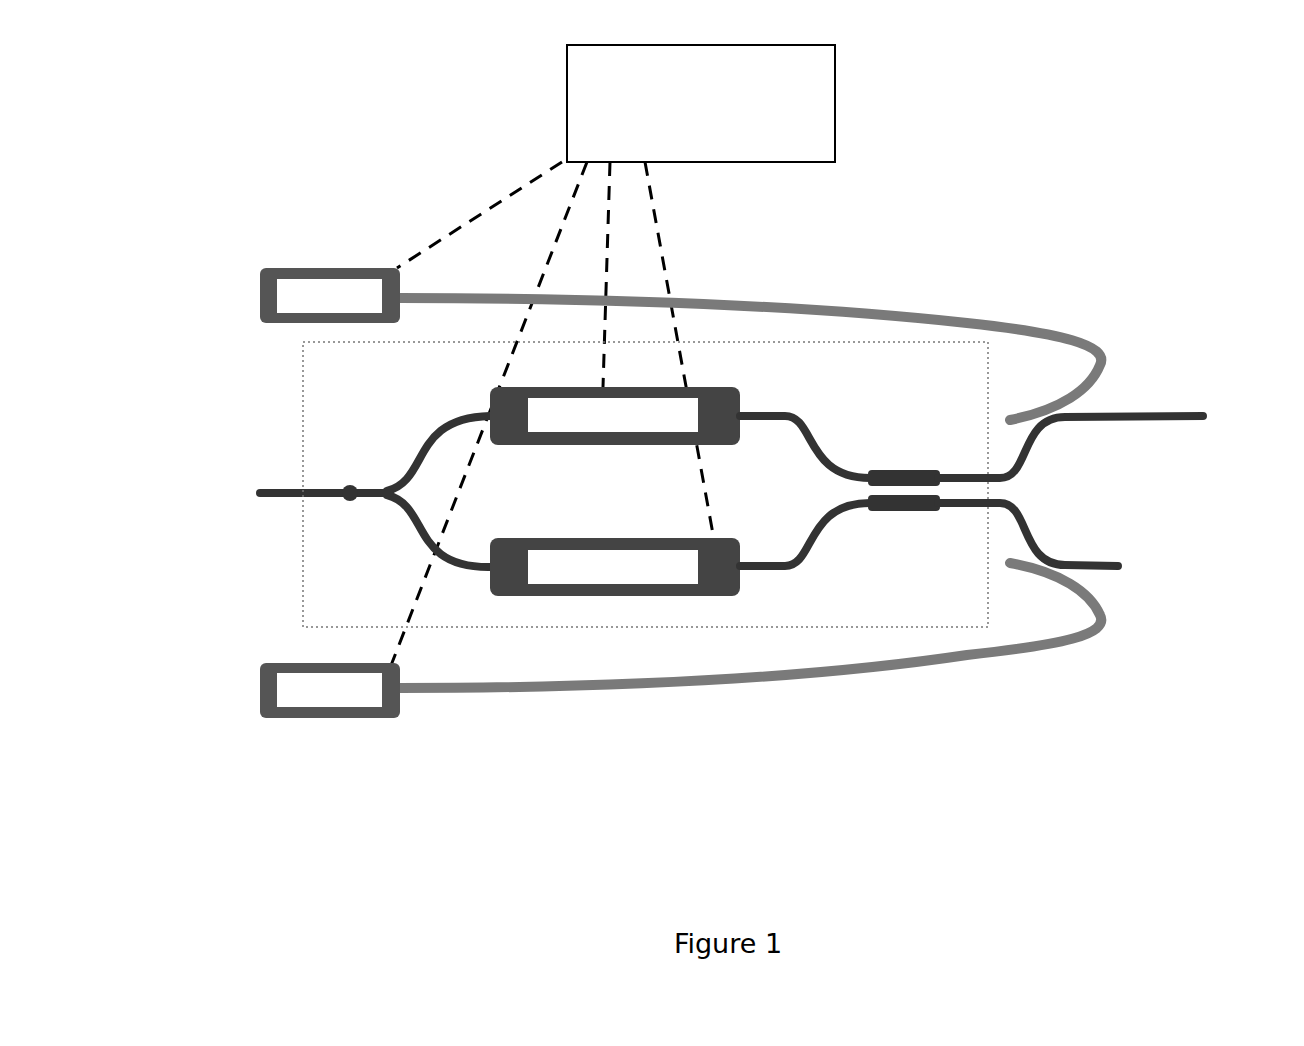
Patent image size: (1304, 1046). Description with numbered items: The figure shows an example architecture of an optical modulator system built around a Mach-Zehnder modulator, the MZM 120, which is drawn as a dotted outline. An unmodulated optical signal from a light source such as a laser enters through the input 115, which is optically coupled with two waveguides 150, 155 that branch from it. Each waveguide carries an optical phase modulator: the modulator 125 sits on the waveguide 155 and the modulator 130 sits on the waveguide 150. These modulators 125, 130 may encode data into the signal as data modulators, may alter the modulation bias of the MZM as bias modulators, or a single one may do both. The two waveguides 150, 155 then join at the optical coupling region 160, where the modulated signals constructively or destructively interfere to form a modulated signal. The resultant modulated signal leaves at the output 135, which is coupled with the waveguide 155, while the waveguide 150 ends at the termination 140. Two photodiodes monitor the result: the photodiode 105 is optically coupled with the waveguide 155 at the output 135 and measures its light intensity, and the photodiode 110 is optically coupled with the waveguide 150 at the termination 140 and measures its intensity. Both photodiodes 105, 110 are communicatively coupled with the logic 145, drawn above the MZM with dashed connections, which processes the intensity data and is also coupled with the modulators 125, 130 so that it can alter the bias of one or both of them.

The photodiode 105 is at (330, 295).
The photodiode 110 is at (330, 690).
The input 115 is at (274, 494).
The MZM 120 is at (645, 484).
The optical phase modulator 125 is at (615, 416).
The optical phase modulator 130 is at (615, 567).
The output 135 is at (1108, 435).
The termination 140 is at (1071, 543).
The logic 145 is at (701, 103).
The waveguide 150 is at (807, 543).
The waveguide 155 is at (808, 437).
The optical coupling region 160 is at (950, 551).